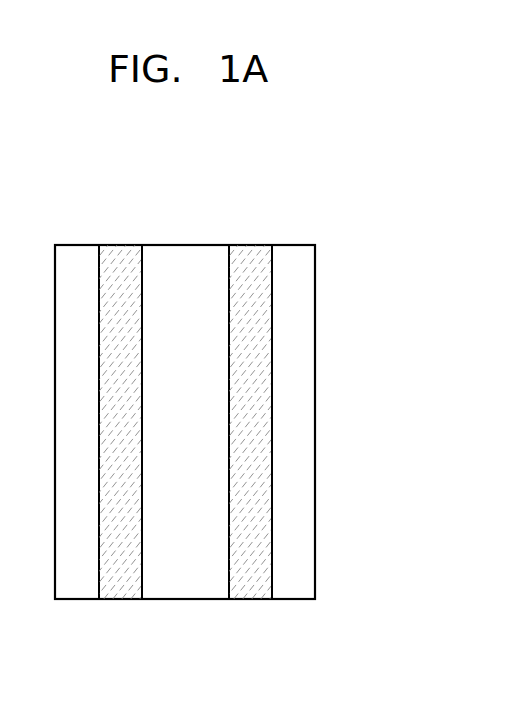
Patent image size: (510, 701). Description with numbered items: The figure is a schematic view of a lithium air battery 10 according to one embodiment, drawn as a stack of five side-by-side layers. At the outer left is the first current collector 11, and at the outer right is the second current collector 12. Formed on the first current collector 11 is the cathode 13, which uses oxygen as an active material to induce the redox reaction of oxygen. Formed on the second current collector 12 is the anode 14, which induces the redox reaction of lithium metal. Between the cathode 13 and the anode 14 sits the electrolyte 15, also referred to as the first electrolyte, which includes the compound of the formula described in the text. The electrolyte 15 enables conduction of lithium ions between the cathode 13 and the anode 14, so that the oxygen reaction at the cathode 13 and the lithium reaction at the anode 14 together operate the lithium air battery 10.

The lithium air battery 10 is at (347, 228).
The first current collector 11 is at (79, 255).
The second current collector 12 is at (294, 255).
The cathode 13 is at (121, 255).
The anode 14 is at (251, 255).
The electrolyte 15 is at (184, 255).